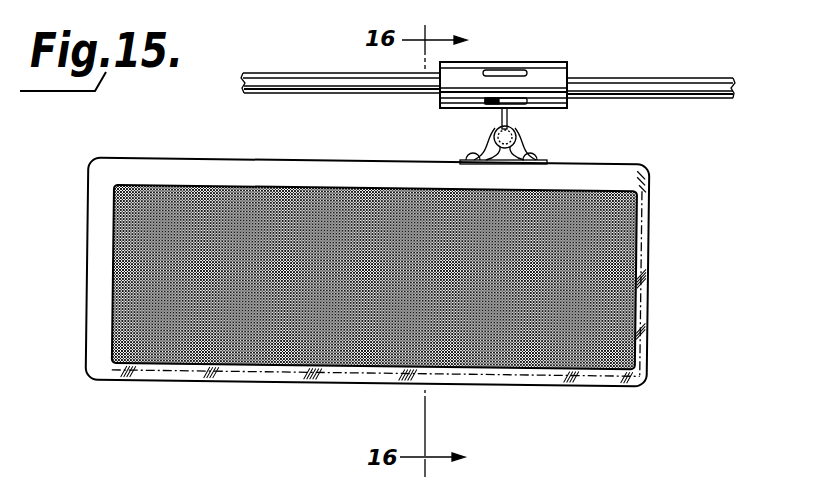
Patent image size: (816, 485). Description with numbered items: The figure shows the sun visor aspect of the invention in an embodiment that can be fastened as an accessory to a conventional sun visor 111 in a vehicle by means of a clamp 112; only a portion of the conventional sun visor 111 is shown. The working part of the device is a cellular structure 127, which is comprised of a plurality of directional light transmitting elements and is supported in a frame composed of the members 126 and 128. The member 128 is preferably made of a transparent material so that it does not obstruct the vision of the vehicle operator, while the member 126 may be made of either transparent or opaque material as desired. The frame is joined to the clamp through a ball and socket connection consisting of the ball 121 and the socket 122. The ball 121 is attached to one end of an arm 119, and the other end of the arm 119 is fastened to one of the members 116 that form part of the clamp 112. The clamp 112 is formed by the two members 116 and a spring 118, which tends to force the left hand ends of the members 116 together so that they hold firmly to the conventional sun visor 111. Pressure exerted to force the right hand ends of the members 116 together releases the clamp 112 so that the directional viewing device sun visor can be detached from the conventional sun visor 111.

The conventional sun visor 111 is at (266, 94).
The clamp 112 is at (574, 61).
The clamp members 116 is at (508, 67).
The spring 118 is at (553, 81).
The arm 119 is at (510, 118).
The ball 121 is at (497, 133).
The socket 122 is at (487, 151).
The frame member 126 is at (322, 169).
The cellular structure 127 is at (583, 352).
The frame member 128 is at (200, 376).